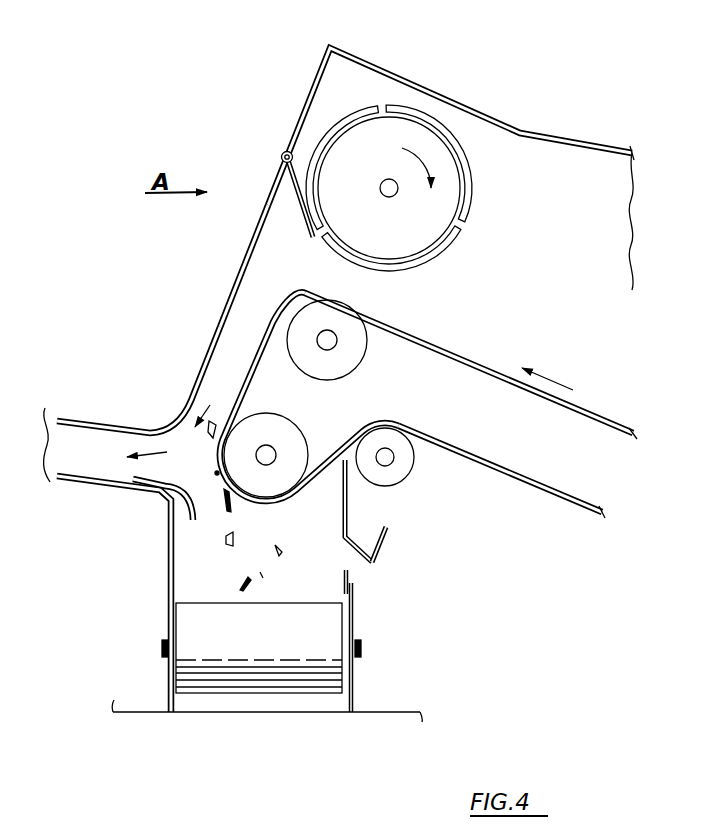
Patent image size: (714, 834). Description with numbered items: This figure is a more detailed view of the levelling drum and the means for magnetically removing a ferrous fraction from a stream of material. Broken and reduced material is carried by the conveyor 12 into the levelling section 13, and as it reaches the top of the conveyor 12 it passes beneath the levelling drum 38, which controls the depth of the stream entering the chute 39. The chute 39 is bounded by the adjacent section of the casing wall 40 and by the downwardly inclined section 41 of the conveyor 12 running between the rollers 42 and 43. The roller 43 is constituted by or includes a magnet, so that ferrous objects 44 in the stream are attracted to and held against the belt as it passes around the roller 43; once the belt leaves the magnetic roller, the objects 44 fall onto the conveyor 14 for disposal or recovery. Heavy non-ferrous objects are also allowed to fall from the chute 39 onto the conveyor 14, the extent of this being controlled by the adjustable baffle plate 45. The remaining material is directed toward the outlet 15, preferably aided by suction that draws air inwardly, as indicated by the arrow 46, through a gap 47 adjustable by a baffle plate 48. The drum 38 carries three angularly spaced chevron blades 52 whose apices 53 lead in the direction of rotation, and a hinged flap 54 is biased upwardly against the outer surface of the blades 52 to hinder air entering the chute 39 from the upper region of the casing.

The conveyor 12 is at (483, 358).
The levelling section 13 is at (268, 149).
The conveyor 14 is at (192, 630).
The outlet 15 is at (45, 412).
The levelling drum 38 is at (418, 132).
The chute 39 is at (233, 303).
The casing wall 40 is at (202, 338).
The downwardly inclined section 41 is at (264, 384).
The roller 42 is at (352, 322).
The roller 43 is at (288, 443).
The ferrous objects 44 is at (227, 510).
The adjustable baffle plate 45 is at (163, 493).
The arrow 46 is at (380, 576).
The gap 47 is at (345, 562).
The baffle plate 48 is at (383, 547).
The chevron blades 52 is at (327, 130).
The apices 53 is at (384, 108).
The hinged flap 54 is at (297, 195).